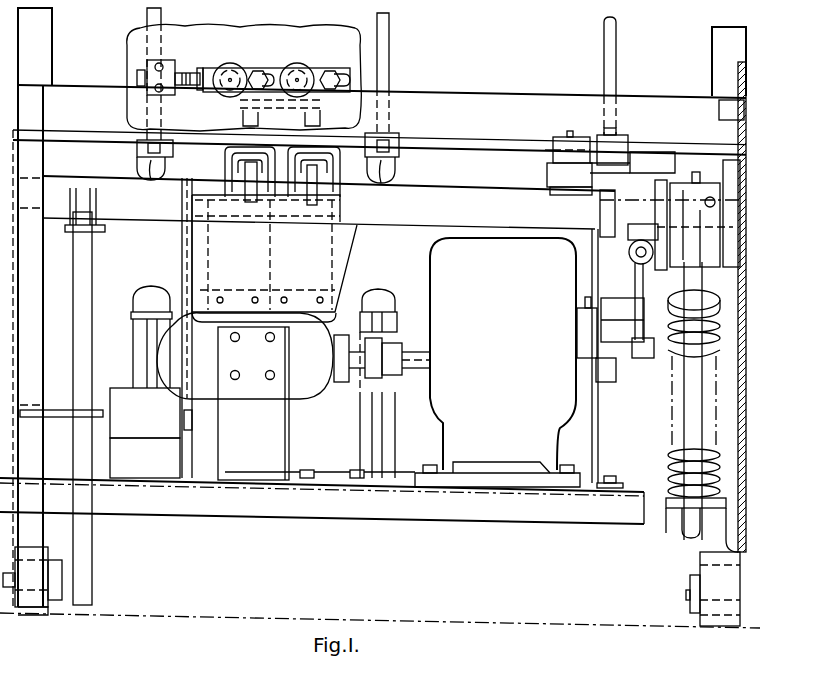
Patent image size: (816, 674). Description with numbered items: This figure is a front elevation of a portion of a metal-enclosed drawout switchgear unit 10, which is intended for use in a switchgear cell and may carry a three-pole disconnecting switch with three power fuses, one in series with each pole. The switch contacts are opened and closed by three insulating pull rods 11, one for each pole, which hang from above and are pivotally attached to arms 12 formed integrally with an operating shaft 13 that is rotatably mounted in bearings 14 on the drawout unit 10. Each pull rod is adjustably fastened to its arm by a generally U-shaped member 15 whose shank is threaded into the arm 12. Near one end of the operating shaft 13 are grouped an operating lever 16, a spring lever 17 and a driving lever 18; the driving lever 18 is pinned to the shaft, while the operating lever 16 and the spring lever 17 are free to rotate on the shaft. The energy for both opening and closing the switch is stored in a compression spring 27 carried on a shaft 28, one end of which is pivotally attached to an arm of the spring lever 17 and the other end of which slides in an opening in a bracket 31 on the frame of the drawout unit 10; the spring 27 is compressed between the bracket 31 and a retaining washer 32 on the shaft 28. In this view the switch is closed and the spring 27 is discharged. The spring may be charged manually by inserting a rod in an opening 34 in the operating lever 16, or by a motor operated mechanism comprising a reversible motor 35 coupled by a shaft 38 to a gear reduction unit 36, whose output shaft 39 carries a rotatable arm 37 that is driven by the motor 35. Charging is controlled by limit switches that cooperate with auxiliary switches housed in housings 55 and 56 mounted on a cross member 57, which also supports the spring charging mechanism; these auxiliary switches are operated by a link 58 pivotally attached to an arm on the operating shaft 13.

The drawout unit 10 is at (372, 253).
The insulating pull rods 11 is at (162, 16).
The arms 12 is at (170, 172).
The operating shaft 13 is at (453, 210).
The bearings 14 is at (43, 152).
The U-shaped members 15 is at (140, 153).
The operating lever 16 is at (628, 243).
The spring lever 17 is at (672, 272).
The driving lever 18 is at (711, 178).
The compression spring 27 is at (672, 338).
The shaft 28 is at (684, 388).
The bracket 31 is at (672, 512).
The retaining washer 32 is at (708, 290).
The opening 34 is at (630, 252).
The reversible motor 35 is at (312, 399).
The gear reduction unit 36 is at (432, 278).
The rotatable arm 37 is at (632, 272).
The shaft 38 is at (421, 365).
The output shaft 39 is at (650, 325).
The housing 55 is at (120, 392).
The housing 56 is at (136, 470).
The cross member 57 is at (322, 480).
The link 58 is at (182, 255).